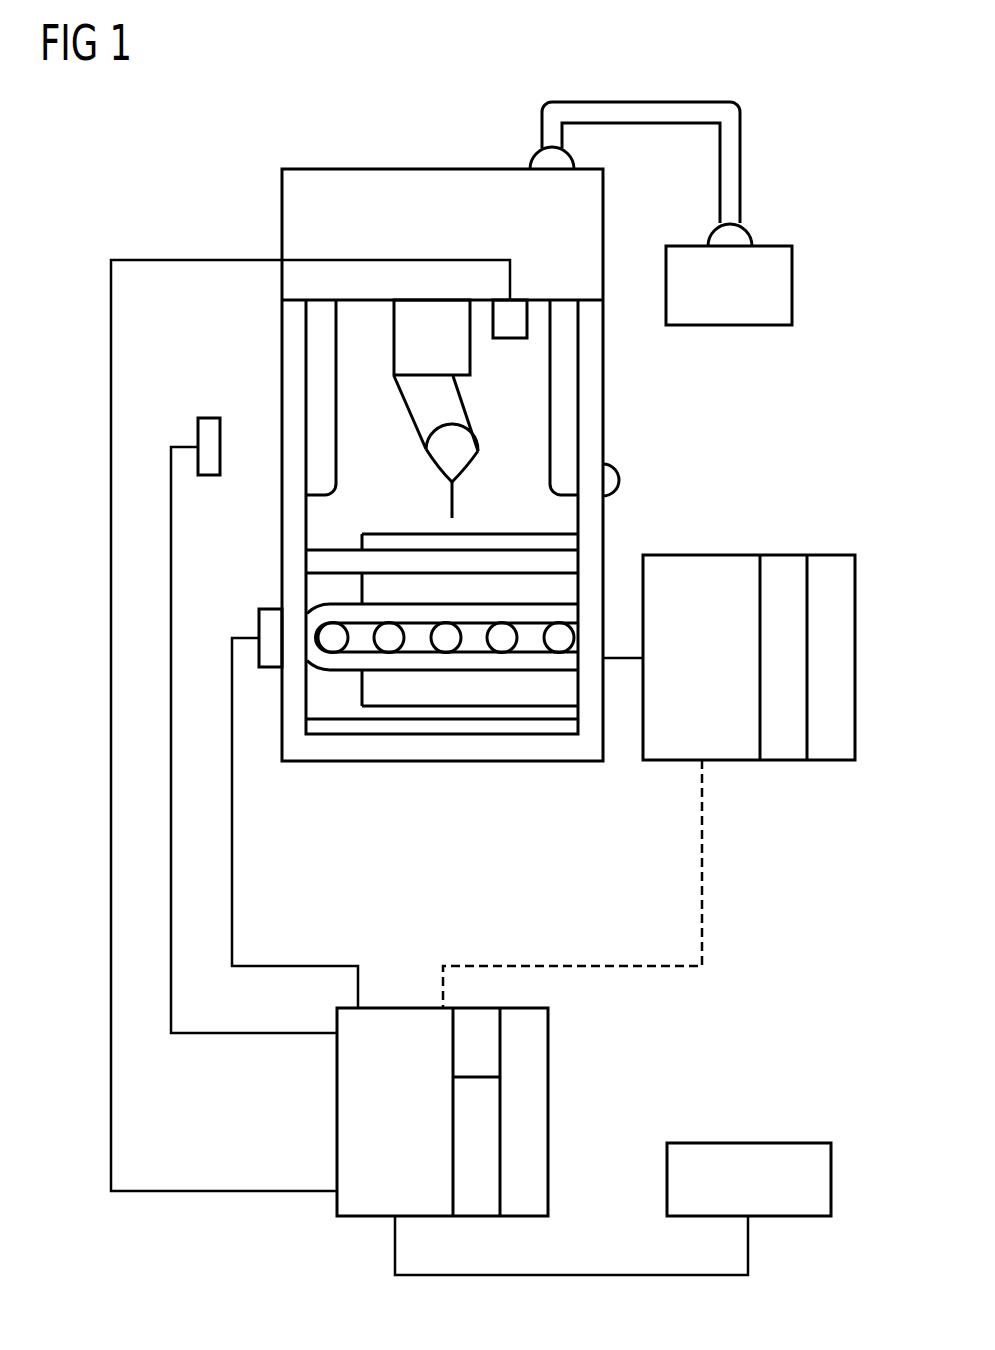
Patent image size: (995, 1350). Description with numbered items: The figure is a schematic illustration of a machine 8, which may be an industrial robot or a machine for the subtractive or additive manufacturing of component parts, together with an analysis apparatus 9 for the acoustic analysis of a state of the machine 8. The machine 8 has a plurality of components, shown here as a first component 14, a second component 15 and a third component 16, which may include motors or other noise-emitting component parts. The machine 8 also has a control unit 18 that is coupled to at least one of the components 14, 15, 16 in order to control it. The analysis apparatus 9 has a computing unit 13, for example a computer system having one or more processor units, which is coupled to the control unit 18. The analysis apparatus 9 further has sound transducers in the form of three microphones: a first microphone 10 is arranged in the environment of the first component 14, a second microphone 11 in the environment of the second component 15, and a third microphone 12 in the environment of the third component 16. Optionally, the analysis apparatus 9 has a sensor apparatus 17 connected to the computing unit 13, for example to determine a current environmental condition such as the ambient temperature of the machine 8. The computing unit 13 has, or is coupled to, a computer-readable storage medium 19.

The machine 8 is at (307, 152).
The analysis apparatus 9 is at (290, 1128).
The first microphone 10 is at (258, 618).
The second microphone 11 is at (198, 430).
The third microphone 12 is at (512, 338).
The computing unit 13 is at (562, 1114).
The first component 14 is at (337, 691).
The second component 15 is at (266, 303).
The third component 16 is at (438, 463).
The sensor apparatus 17 is at (748, 1143).
The control unit 18 is at (752, 528).
The computer-readable storage medium 19 is at (490, 1042).